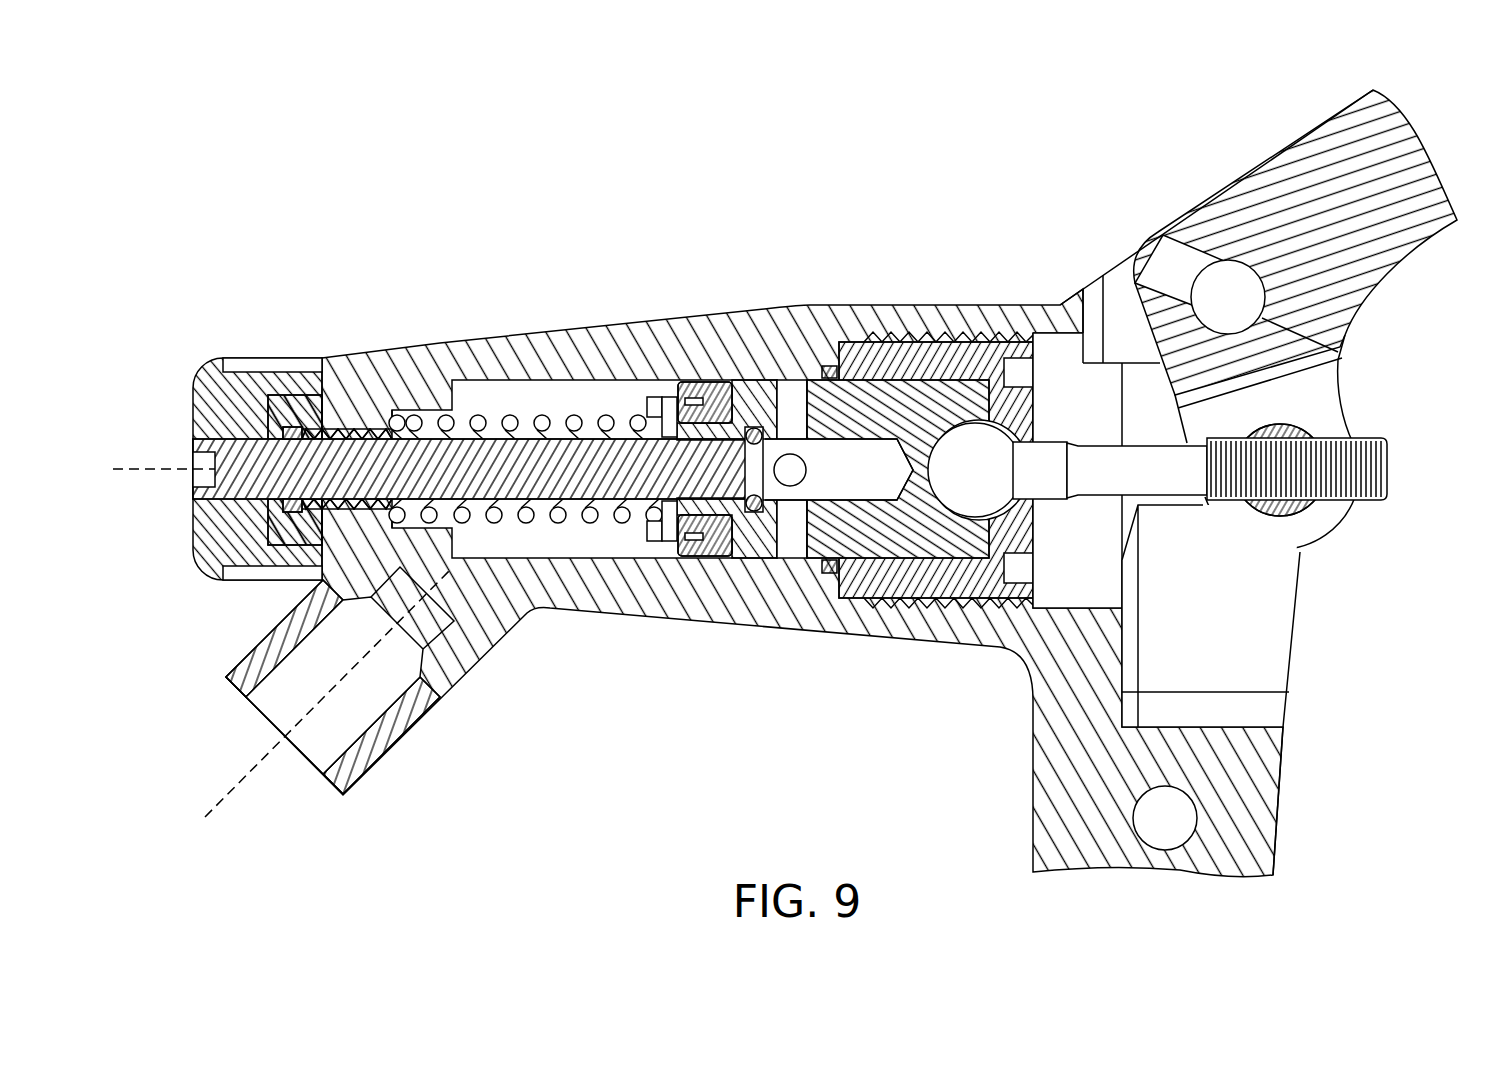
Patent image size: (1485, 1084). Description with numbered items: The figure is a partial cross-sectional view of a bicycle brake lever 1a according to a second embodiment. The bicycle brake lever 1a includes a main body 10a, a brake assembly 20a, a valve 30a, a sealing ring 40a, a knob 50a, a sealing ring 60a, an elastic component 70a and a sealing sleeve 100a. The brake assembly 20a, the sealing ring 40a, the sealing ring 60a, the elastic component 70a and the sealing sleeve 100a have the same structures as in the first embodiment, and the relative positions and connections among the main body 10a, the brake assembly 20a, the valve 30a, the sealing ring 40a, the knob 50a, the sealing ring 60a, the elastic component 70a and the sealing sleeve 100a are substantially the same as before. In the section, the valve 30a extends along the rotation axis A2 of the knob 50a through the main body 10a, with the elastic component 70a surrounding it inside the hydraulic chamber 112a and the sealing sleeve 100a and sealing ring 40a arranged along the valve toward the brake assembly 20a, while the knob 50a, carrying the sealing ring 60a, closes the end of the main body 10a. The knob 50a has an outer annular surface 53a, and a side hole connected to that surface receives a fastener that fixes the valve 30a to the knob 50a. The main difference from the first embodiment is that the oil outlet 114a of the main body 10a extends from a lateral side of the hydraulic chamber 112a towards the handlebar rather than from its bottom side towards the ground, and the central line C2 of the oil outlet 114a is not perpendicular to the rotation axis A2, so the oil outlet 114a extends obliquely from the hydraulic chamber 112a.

The bicycle brake lever 1a is at (697, 530).
The main body 10a is at (701, 304).
The brake assembly 20a is at (1235, 168).
The valve 30a is at (497, 460).
The sealing ring 40a is at (755, 428).
The knob 50a is at (207, 396).
The outer annular surface 53a is at (240, 357).
The sealing ring 60a is at (293, 427).
The elastic component 70a is at (577, 420).
The sealing sleeve 100a is at (707, 560).
The hydraulic chamber 112a is at (573, 533).
The oil outlet 114a is at (348, 706).
The rotation axis A2 is at (132, 472).
The central line C2 is at (228, 788).